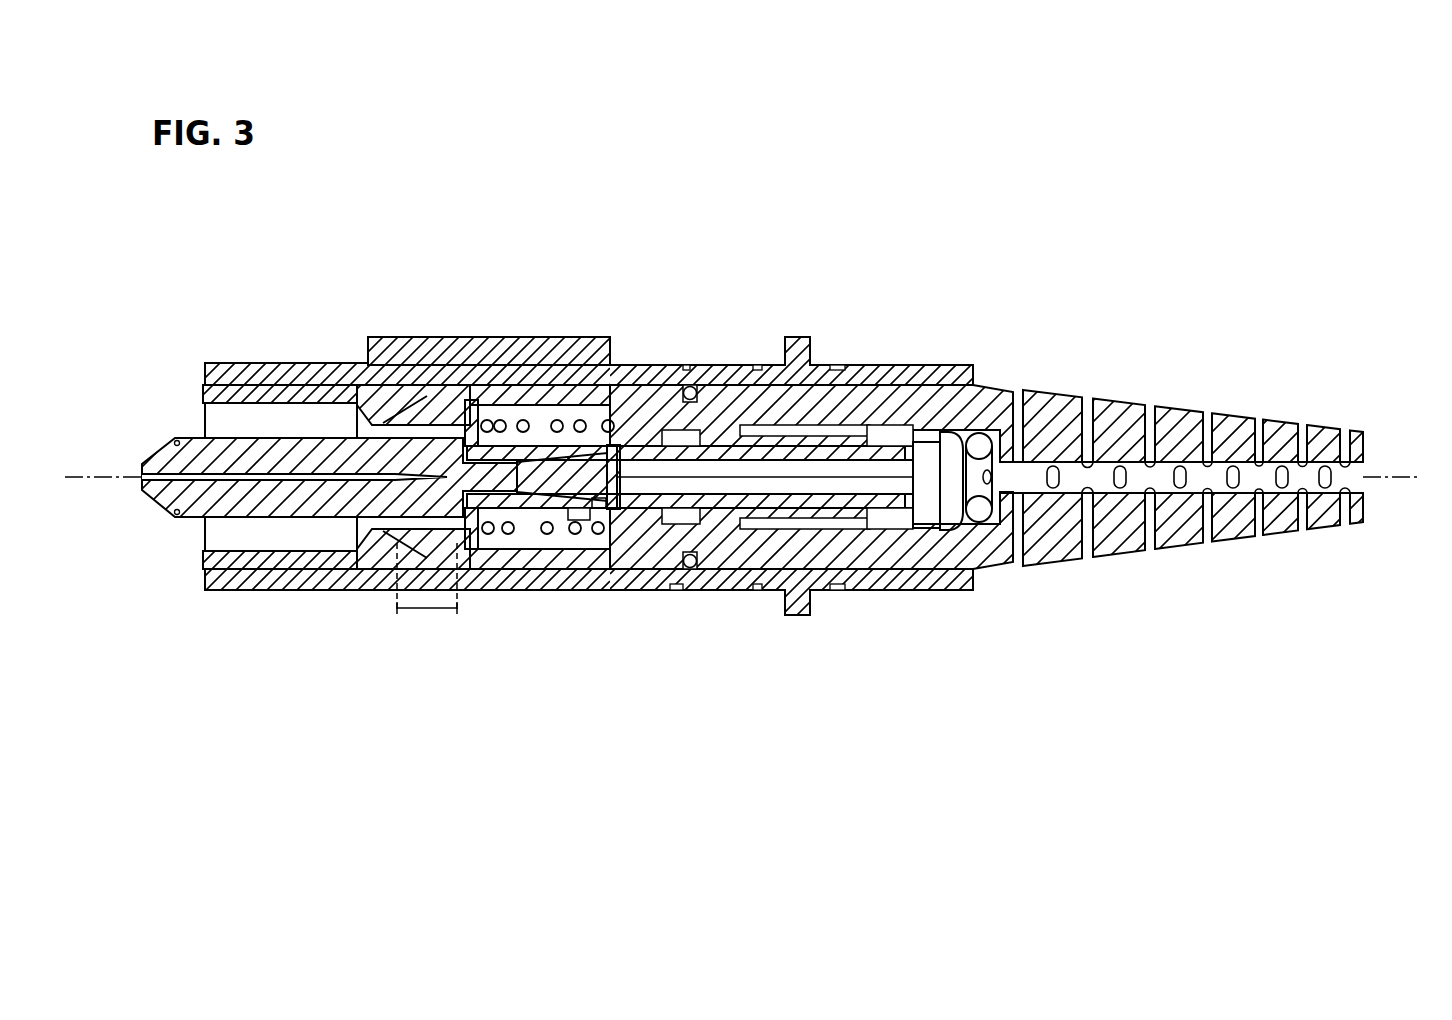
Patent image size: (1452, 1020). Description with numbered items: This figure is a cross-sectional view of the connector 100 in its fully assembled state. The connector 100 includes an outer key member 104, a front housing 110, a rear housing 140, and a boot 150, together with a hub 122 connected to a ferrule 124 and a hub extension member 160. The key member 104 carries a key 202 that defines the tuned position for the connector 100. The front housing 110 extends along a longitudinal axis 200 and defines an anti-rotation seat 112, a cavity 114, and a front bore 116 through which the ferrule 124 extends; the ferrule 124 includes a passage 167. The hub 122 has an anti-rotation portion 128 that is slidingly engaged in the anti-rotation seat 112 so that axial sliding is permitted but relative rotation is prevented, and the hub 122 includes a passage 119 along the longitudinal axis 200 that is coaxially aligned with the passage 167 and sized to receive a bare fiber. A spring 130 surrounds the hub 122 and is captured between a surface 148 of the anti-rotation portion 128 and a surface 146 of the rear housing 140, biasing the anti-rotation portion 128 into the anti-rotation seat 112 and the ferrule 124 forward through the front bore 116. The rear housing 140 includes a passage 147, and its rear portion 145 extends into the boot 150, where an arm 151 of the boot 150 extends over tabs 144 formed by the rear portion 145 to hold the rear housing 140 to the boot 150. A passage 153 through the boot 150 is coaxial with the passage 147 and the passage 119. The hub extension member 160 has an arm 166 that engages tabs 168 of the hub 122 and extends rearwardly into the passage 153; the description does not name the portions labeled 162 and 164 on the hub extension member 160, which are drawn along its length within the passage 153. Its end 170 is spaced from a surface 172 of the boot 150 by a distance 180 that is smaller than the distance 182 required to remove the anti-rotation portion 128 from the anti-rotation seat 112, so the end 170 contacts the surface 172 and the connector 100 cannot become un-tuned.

The connector 100 is at (1080, 317).
The outer key member 104 is at (295, 362).
The front housing 110 is at (327, 386).
The anti-rotation seat 112 is at (438, 388).
The cavity 114 is at (594, 395).
The front bore 116 is at (243, 415).
The passage 119 is at (533, 477).
The hub 122 is at (532, 500).
The ferrule 124 is at (285, 497).
The anti-rotation portion 128 is at (398, 412).
The spring 130 is at (560, 425).
The rear housing 140 is at (645, 557).
The tabs 144 is at (727, 547).
The rear portion 145 is at (822, 433).
The surface 146 is at (648, 400).
The passage 147 is at (592, 563).
The surface 148 is at (476, 531).
The boot 150 is at (1047, 398).
The arm 151 is at (705, 393).
The passage 153 is at (902, 433).
The hub extension member 160 is at (833, 502).
The insulator 162 is at (598, 446).
The dielectric sleeve 164 is at (887, 502).
The arm 166 is at (578, 510).
The passage 167 is at (232, 480).
The tabs 168 is at (598, 503).
The end 170 is at (912, 498).
The surface 172 is at (960, 437).
The distance 180 is at (935, 442).
The distance 182 is at (422, 609).
The longitudinal axis 200 is at (1407, 477).
The key 202 is at (499, 340).